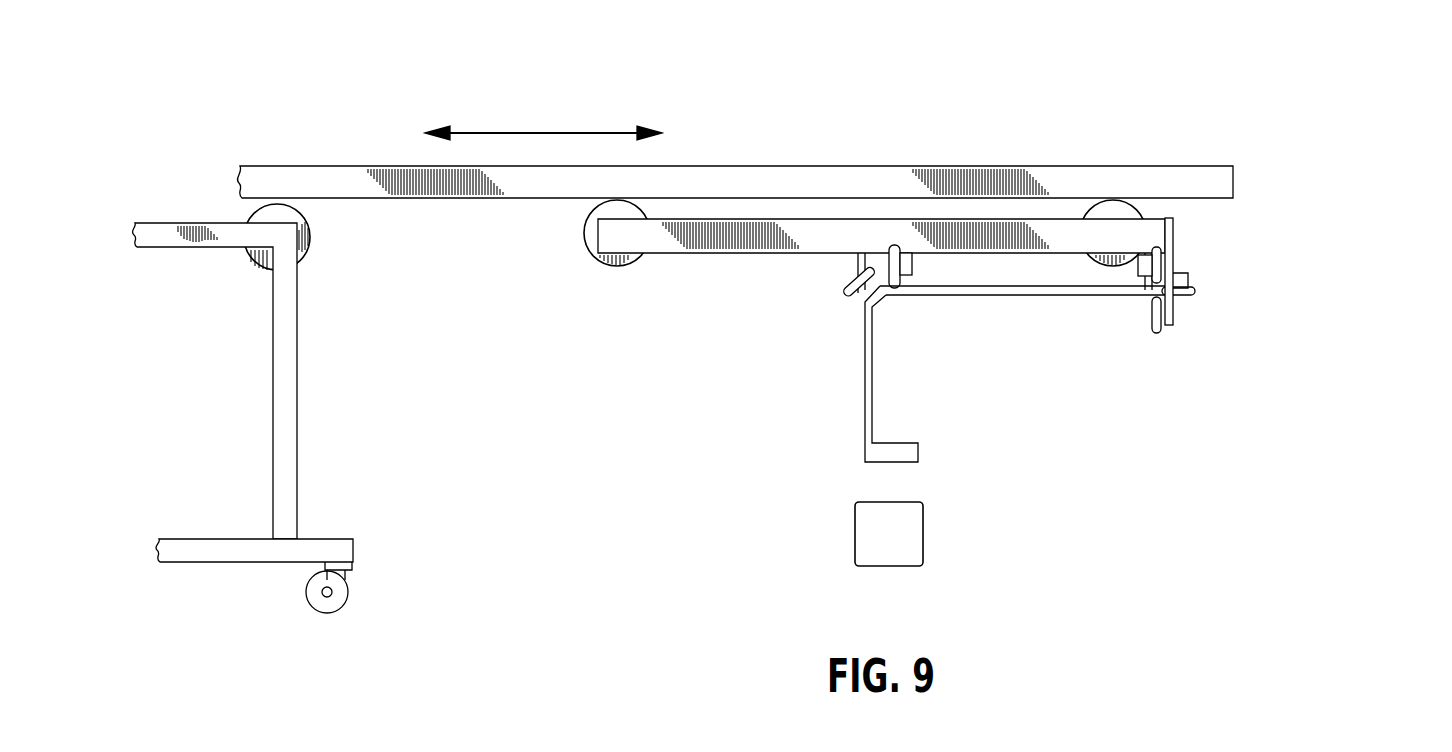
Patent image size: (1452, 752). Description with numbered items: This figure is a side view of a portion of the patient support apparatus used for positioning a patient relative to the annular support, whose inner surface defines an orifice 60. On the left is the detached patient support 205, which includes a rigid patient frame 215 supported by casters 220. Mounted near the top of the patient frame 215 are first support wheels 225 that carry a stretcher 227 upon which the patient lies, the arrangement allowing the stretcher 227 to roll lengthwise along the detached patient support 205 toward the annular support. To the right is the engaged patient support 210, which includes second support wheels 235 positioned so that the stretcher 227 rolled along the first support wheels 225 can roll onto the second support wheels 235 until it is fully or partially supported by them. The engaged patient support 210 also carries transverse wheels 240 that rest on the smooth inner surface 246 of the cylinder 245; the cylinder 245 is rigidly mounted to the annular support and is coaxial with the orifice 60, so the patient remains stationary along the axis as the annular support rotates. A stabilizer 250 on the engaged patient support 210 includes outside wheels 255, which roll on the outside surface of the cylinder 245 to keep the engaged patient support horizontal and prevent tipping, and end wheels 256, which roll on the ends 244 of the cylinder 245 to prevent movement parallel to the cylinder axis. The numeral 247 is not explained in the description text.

The orifice 60 is at (977, 89).
The detached patient support 205 is at (238, 130).
The engaged patient support 210 is at (1282, 293).
The patient frame 215 is at (297, 447).
The casters 220 is at (347, 600).
The first support wheels 225 is at (310, 232).
The stretcher 227 is at (687, 165).
The second support wheels 235 is at (612, 266).
The transverse wheels 240 is at (898, 290).
The ends 244 is at (855, 305).
The cylinder 245 is at (863, 403).
The inner surface 246 is at (990, 287).
The lower plate 247 is at (1070, 297).
The stabilizer 250 is at (1197, 321).
The outside wheels 255 is at (1160, 333).
The end wheels 256 is at (845, 283).